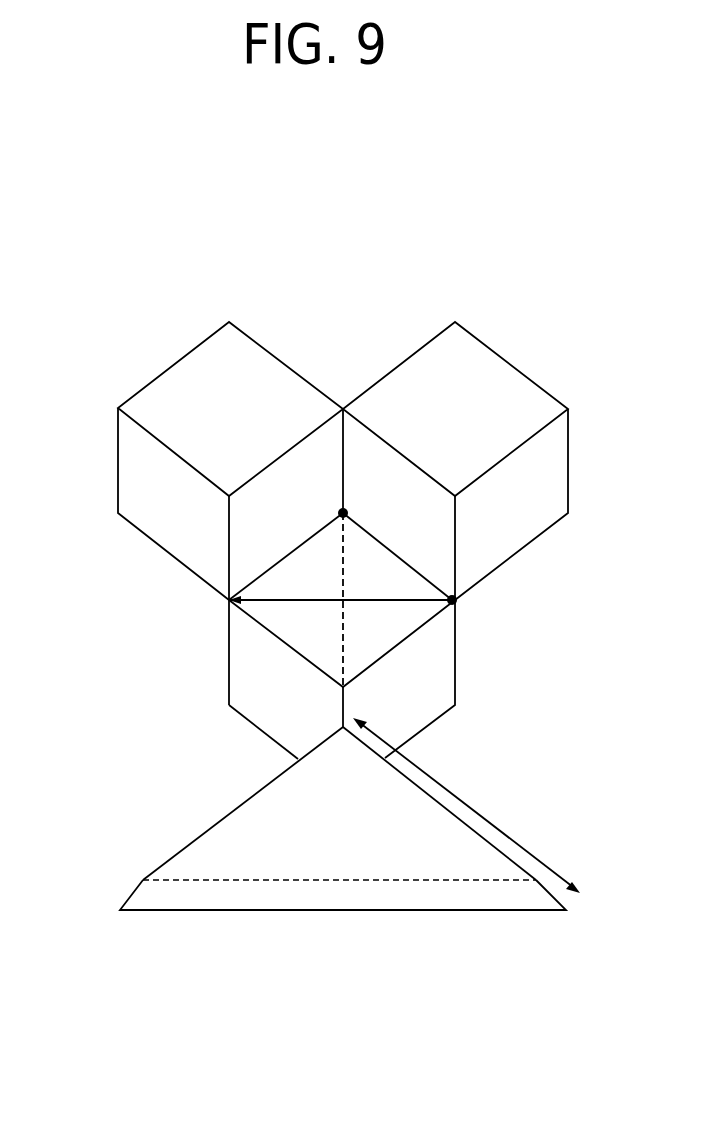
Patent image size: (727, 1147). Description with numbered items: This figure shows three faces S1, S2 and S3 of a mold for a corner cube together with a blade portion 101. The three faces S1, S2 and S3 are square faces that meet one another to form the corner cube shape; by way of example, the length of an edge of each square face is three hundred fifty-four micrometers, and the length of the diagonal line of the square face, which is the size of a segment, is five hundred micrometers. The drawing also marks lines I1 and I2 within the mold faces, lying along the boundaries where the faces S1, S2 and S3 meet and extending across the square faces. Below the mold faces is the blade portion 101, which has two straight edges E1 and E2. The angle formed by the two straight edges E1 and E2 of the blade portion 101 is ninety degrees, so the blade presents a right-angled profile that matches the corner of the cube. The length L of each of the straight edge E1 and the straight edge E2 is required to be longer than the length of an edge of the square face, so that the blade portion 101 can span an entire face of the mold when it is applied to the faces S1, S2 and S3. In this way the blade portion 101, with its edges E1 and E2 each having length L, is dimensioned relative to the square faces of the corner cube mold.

The face S1 is at (375, 627).
The face S2 is at (255, 541).
The face S3 is at (395, 470).
The first intersection line I1 is at (395, 552).
The second intersection line I2 is at (267, 602).
The straight edge E1 is at (262, 787).
The straight edge E2 is at (422, 789).
The length L is at (470, 808).
The blade portion 101 is at (343, 851).